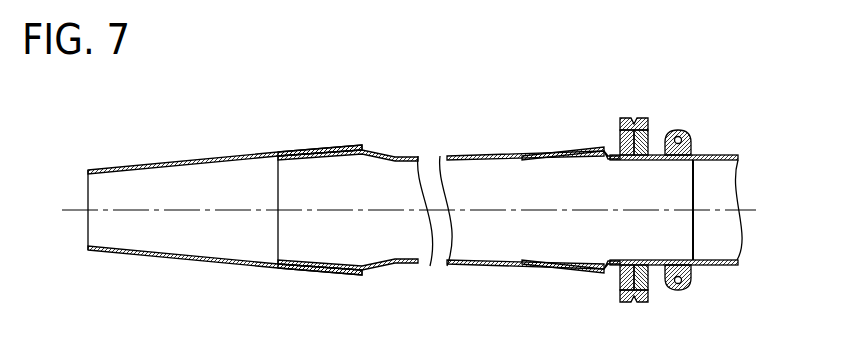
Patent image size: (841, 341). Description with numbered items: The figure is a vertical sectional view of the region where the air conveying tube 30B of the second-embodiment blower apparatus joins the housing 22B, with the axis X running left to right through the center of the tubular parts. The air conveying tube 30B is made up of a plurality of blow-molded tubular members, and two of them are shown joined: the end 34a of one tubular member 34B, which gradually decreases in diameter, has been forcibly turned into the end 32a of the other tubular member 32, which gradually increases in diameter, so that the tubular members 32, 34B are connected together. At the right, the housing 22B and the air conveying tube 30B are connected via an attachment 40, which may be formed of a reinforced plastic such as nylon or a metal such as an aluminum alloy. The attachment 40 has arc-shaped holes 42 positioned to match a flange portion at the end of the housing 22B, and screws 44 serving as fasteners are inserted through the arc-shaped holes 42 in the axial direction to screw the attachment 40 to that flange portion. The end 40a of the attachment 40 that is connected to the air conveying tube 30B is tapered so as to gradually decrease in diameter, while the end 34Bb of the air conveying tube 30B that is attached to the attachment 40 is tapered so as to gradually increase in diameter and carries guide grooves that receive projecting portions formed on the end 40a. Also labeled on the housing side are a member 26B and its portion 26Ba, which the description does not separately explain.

The central axis X is at (69, 206).
The air conveying tube 30B is at (217, 212).
The tubular member 32 is at (152, 260).
The end of tubular member 32a is at (291, 270).
The tubular member 34B is at (449, 216).
The end of tubular member 34a is at (328, 262).
The end of air conveying tube 34Bb is at (556, 274).
The end of attachment 40a is at (547, 164).
The attachment 40 is at (640, 112).
The arc-shaped holes 42 is at (621, 133).
The screws 44 is at (649, 137).
The connecting pipe 26B is at (726, 154).
The flange of connecting pipe 26Ba is at (640, 304).
The housing 22B is at (688, 200).